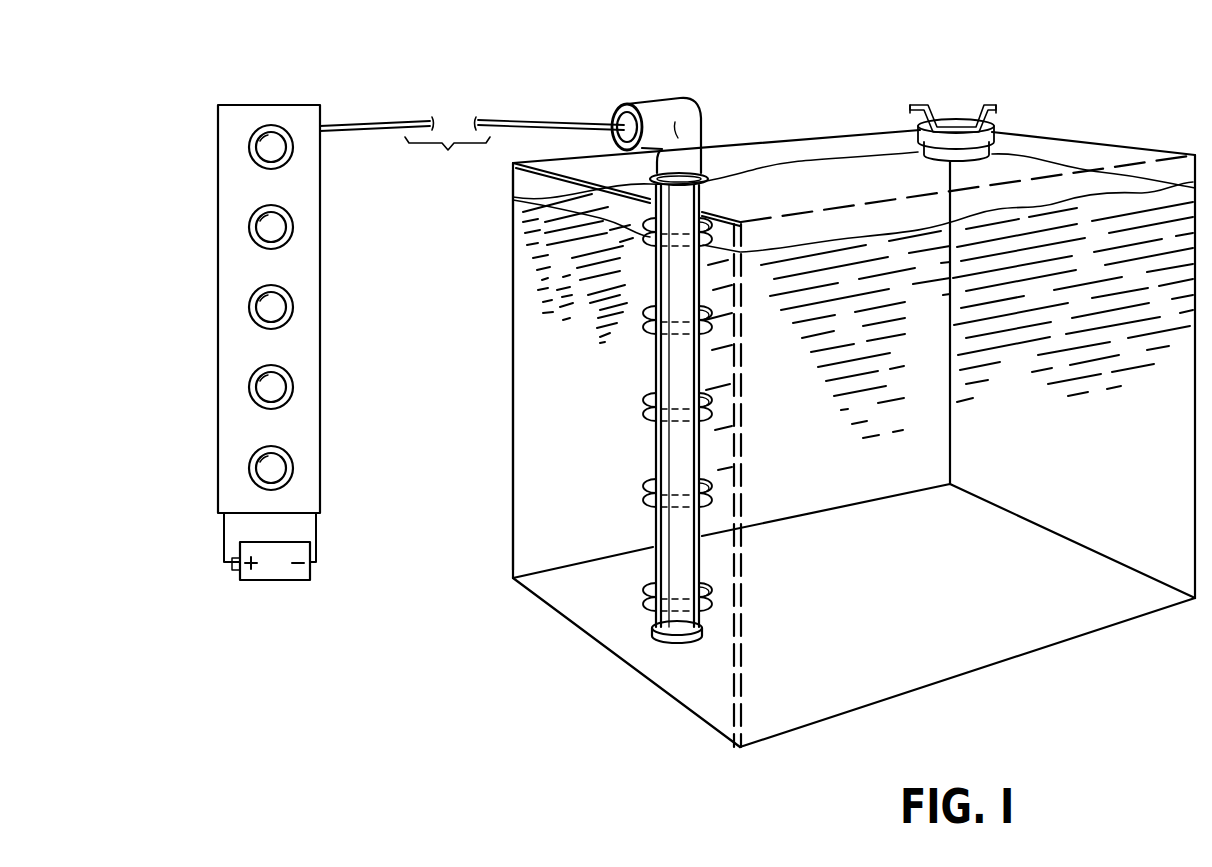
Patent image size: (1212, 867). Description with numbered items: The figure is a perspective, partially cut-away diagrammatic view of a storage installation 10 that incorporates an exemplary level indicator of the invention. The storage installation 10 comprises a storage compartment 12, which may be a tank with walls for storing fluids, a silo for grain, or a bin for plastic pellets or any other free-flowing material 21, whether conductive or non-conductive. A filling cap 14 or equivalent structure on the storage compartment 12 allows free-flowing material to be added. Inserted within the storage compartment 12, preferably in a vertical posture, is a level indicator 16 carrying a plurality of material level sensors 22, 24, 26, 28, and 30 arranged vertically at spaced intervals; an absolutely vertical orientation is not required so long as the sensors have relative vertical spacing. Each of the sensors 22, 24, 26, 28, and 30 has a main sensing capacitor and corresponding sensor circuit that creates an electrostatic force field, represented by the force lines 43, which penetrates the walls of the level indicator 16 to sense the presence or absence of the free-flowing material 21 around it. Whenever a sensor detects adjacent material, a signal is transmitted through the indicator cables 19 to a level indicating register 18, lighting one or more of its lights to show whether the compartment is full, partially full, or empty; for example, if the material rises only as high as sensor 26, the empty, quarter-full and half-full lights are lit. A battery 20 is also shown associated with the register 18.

The storage installation 10 is at (1080, 126).
The storage compartment 12 is at (1103, 634).
The filling cap 14 is at (957, 120).
The level indicator 16 is at (676, 452).
The register 18 is at (294, 107).
The indicator cables 19 is at (538, 118).
The battery 20 is at (300, 570).
The free-flowing material 21 is at (543, 360).
The material level sensor 22 is at (644, 585).
The material level sensor 24 is at (644, 494).
The material level sensor 26 is at (645, 404).
The material level sensor 28 is at (645, 333).
The material level sensor 30 is at (720, 216).
The force lines 43 is at (716, 245).